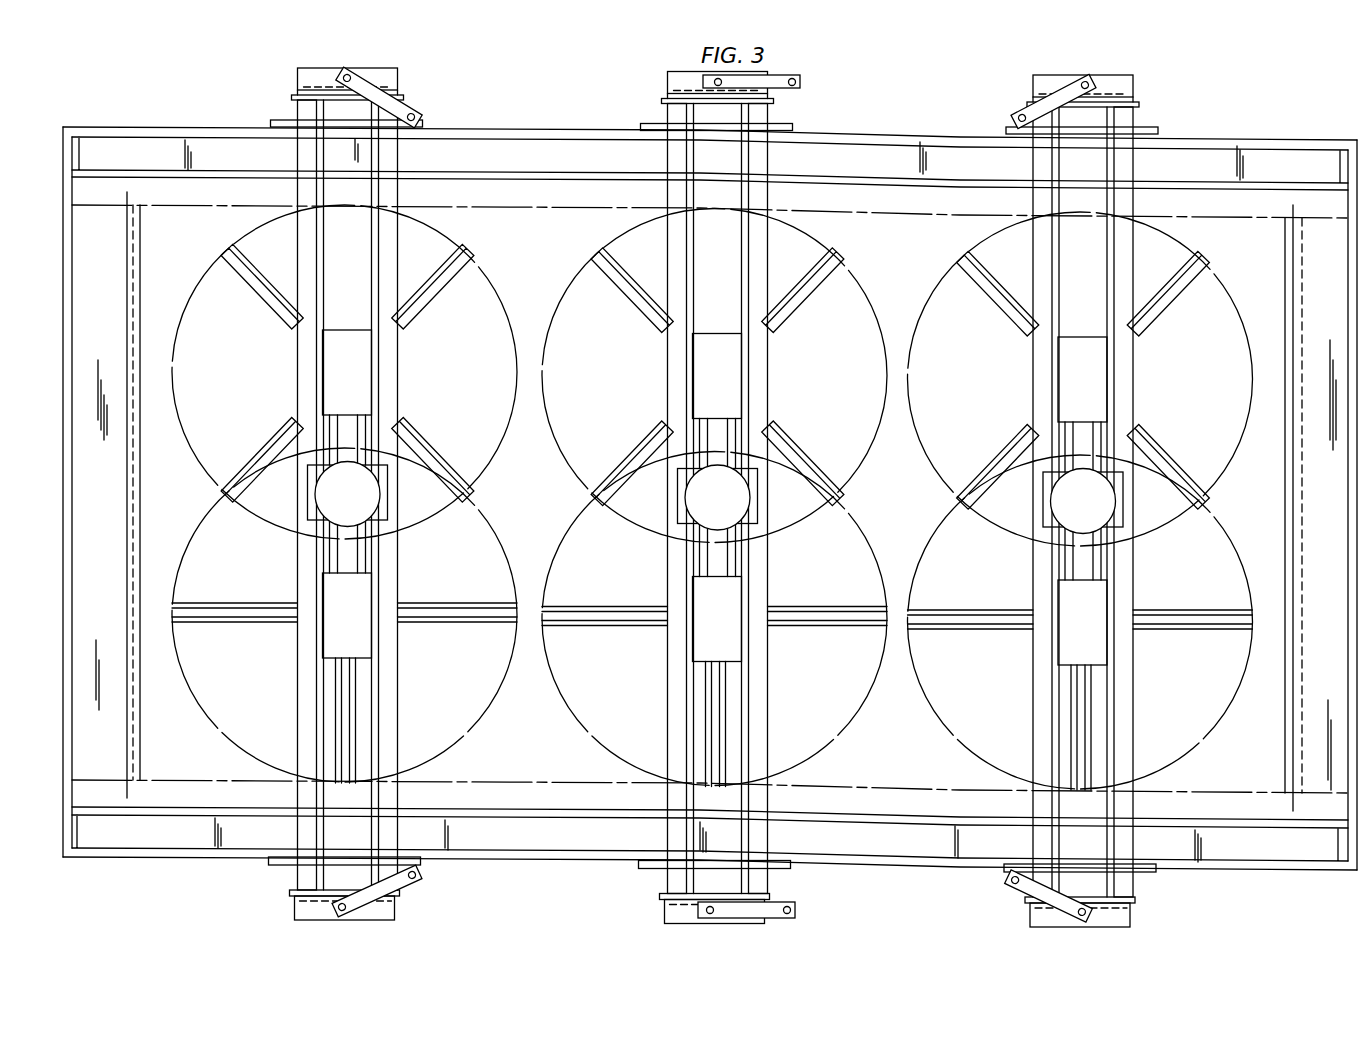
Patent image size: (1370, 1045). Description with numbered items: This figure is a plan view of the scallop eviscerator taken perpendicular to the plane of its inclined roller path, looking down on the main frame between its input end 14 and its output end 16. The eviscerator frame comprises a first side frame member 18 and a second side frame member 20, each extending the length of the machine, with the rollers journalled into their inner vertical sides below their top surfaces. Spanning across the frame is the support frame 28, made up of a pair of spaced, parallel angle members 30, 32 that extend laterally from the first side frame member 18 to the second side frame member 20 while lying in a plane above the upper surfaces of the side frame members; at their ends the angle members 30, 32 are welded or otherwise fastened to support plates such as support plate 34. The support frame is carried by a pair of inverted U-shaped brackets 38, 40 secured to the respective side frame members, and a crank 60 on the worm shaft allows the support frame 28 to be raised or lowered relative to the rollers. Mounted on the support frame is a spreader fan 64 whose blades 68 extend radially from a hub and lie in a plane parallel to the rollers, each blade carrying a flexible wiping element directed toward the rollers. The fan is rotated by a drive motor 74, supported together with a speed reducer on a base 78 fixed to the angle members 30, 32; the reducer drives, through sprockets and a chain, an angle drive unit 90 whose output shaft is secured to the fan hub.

The input end 14 is at (56, 472).
The output end 16 is at (1358, 548).
The first side frame member 18 is at (548, 842).
The second side frame member 20 is at (551, 147).
The support frame 28 is at (712, 506).
The angle member 30 is at (286, 495).
The angle member 32 is at (410, 495).
The support plate 34 is at (322, 889).
The bracket 38 is at (367, 920).
The bracket 40 is at (319, 84).
The crank 60 is at (395, 891).
The spreader fan 64 is at (262, 291).
The blades 68 is at (433, 311).
The drive motor 74 is at (347, 494).
The base 78 is at (368, 492).
The angle drive unit 90 is at (382, 620).